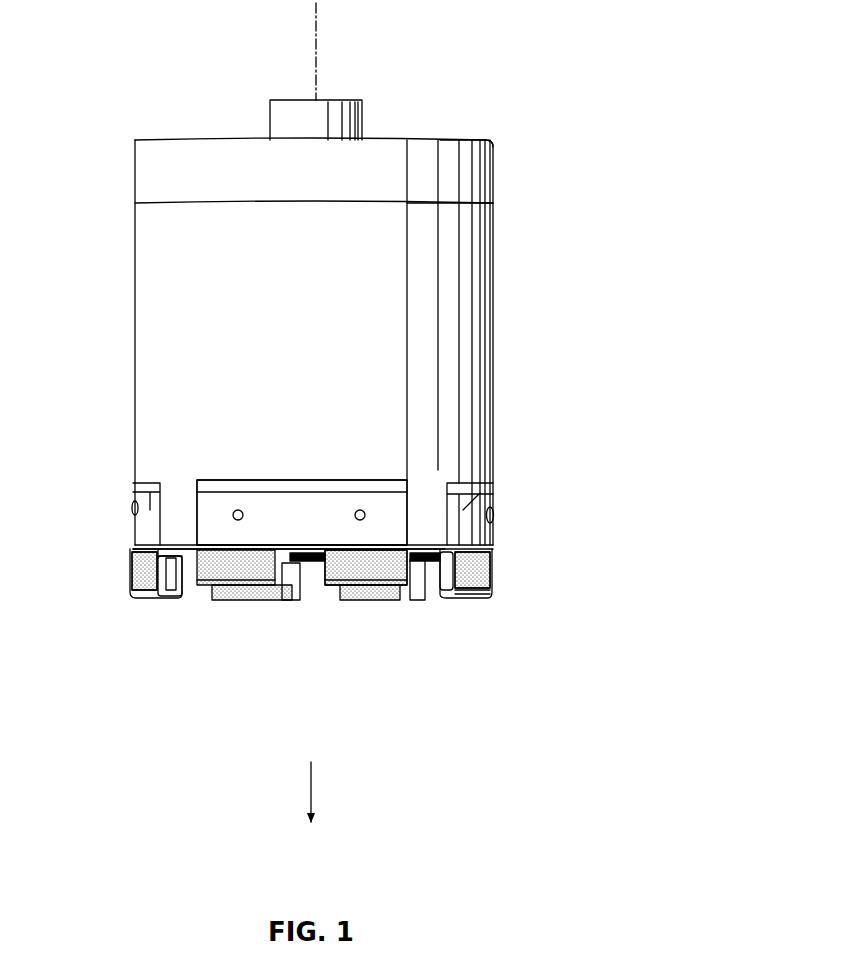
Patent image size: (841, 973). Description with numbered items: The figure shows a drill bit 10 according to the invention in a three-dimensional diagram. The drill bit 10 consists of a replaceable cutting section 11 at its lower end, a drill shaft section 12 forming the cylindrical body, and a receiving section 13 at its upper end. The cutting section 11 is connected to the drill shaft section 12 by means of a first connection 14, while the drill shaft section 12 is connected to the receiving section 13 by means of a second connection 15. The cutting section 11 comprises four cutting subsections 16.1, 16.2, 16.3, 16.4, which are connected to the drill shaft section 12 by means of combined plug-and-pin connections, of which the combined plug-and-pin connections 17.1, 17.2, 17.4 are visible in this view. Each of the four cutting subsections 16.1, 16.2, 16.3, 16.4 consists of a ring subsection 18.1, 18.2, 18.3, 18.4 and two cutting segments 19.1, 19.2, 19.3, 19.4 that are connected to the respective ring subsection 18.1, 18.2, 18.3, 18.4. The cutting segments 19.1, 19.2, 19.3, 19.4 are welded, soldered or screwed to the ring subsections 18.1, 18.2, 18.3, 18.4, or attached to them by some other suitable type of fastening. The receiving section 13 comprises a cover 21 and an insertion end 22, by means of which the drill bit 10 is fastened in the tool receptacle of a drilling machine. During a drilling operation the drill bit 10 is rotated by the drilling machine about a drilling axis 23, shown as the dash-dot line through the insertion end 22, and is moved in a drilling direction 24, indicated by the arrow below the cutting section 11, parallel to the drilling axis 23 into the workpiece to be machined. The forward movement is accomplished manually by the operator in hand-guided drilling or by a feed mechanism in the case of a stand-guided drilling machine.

The drill bit 10 is at (371, 344).
The cutting section 11 is at (594, 560).
The drill shaft section 12 is at (446, 311).
The receiving section 13 is at (500, 125).
The first connection 14 is at (392, 474).
The second connection 15 is at (260, 196).
The cutting subsection 16.1 is at (243, 474).
The cutting subsection 16.2 is at (118, 568).
The cutting subsection 16.3 is at (310, 572).
The cutting subsection 16.4 is at (506, 576).
The combined plug-and-pin connection 17.1 is at (358, 508).
The combined plug-and-pin connection 17.2 is at (130, 510).
The combined plug-and-pin connection 17.4 is at (498, 518).
The ring subsection 18.1 is at (298, 504).
The ring subsection 18.2 is at (152, 505).
The ring subsection 18.3 is at (294, 557).
The ring subsection 18.4 is at (483, 497).
The cutting segment 19.1 is at (203, 592).
The cutting segment 19.2 is at (175, 590).
The cutting segment 19.3 is at (292, 606).
The cutting segment 19.4 is at (455, 600).
The cover 21 is at (462, 200).
The insertion end 22 is at (282, 118).
The drilling axis 23 is at (318, 40).
The drilling direction 24 is at (313, 792).